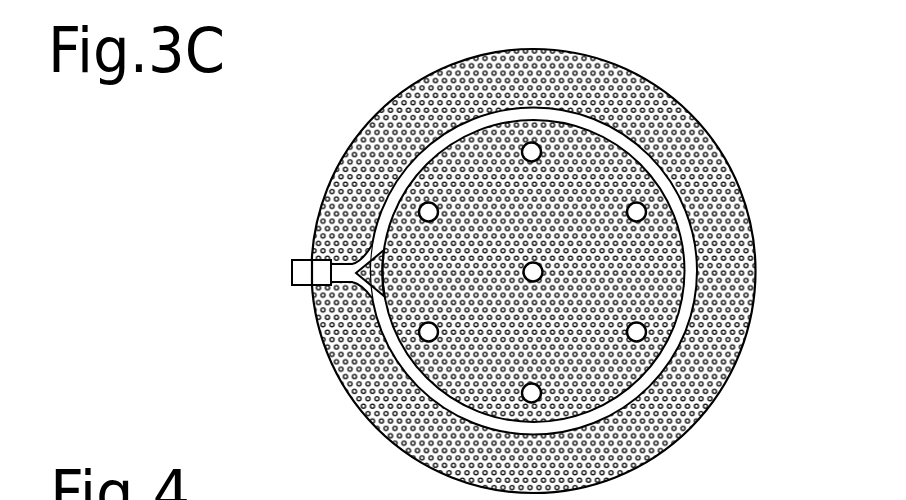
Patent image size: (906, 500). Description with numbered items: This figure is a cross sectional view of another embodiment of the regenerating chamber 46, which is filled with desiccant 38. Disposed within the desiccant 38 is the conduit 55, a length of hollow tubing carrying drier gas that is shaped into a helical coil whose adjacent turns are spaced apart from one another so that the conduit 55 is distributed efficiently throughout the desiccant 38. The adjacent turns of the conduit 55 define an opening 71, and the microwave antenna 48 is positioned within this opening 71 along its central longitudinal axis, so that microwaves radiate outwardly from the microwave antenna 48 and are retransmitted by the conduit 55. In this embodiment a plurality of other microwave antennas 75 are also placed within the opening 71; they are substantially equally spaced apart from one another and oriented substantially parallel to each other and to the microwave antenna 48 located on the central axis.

The desiccant 38 is at (703, 197).
The conduit 55 is at (528, 106).
The microwave antenna 48 is at (534, 268).
The other microwave antennas 75 is at (530, 148).
The regenerating chamber 46 is at (395, 432).
The opening 71 is at (462, 380).